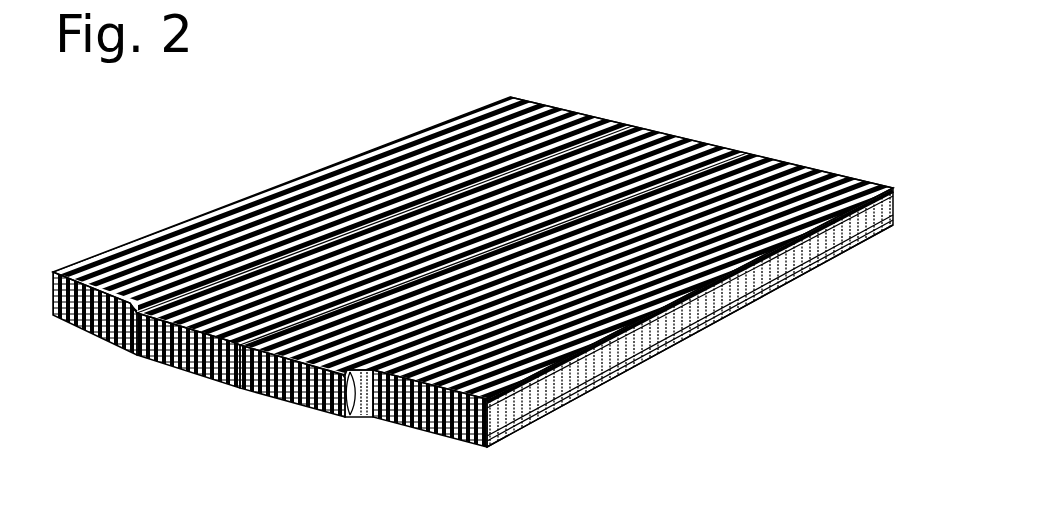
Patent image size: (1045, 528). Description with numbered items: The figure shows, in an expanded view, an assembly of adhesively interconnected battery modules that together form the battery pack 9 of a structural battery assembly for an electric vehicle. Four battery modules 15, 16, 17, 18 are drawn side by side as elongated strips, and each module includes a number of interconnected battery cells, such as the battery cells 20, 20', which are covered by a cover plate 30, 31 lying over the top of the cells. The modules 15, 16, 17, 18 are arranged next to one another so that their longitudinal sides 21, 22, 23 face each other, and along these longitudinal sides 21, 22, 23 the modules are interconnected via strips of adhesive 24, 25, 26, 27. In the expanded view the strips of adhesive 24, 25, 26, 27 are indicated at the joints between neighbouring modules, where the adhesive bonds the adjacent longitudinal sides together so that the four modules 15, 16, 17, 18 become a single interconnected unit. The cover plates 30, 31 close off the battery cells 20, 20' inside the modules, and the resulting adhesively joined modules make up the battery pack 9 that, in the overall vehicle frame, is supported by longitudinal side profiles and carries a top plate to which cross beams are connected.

The battery pack 9 is at (493, 428).
The battery module 15 is at (203, 219).
The battery module 16 is at (628, 136).
The battery module 17 is at (727, 192).
The battery module 18 is at (830, 186).
The battery cell 20 is at (690, 336).
The battery cell 20' is at (690, 325).
The longitudinal side 21 is at (377, 148).
The longitudinal side 22 is at (727, 145).
The longitudinal side 23 is at (797, 257).
The strip of adhesive 24 is at (710, 290).
The strip of adhesive 25 is at (753, 300).
The strip of adhesive 26 is at (350, 414).
The strip of adhesive 27 is at (372, 405).
The cover plate 30 is at (841, 215).
The cover plate 31 is at (573, 146).